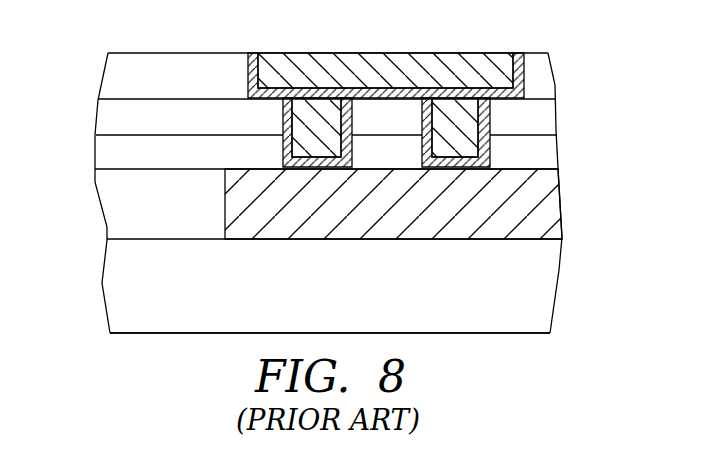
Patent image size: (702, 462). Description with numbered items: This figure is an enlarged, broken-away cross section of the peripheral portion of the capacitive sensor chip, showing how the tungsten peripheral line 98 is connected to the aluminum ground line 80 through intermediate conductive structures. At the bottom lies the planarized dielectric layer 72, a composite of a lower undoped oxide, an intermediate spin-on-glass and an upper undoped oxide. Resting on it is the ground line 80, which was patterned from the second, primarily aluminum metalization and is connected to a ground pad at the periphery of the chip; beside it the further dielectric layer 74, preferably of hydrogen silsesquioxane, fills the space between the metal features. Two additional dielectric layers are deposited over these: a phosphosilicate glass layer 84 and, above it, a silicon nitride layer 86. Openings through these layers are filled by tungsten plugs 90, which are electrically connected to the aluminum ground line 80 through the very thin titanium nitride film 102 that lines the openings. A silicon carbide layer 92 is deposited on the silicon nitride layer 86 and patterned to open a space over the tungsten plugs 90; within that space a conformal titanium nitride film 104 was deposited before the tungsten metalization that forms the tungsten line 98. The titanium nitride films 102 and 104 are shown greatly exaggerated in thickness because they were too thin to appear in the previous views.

The planarized dielectric layer 72 is at (346, 298).
The dielectric layer 74 is at (105, 205).
The ground line 80 is at (555, 202).
The phosphosilicate glass layer 84 is at (97, 153).
The silicon nitride layer 86 is at (100, 118).
The tungsten plugs 90 is at (476, 139).
The silicon carbide layer 92 is at (105, 76).
The tungsten peripheral line 98 is at (393, 60).
The titanium nitride film 102 is at (487, 121).
The titanium nitride film 104 is at (253, 60).